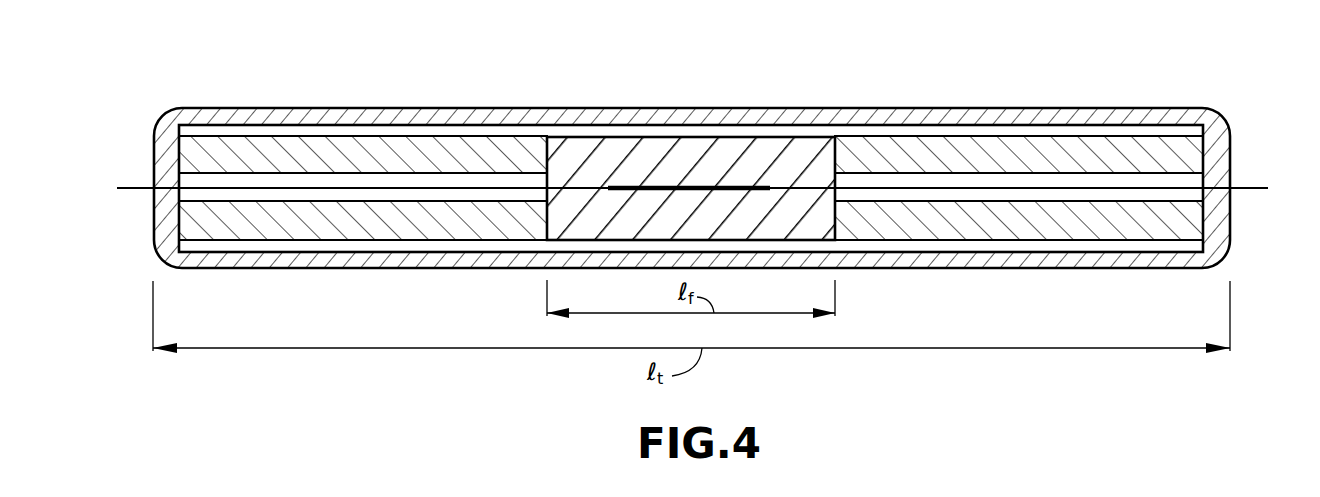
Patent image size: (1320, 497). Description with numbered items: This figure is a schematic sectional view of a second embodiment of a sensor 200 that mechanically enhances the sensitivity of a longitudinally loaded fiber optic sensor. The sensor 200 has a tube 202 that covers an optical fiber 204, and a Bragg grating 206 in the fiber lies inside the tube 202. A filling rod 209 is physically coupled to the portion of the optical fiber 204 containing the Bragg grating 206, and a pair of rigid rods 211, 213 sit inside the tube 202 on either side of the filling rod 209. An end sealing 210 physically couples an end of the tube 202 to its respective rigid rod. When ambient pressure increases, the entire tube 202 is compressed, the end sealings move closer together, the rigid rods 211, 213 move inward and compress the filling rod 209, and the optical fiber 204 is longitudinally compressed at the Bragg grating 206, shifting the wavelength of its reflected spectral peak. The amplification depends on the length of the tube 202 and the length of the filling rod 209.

The sensor 200 is at (667, 262).
The tube 202 is at (412, 113).
The optical fiber 204 is at (132, 187).
The Bragg grating 206 is at (722, 187).
The filling rod 209 is at (608, 142).
The end sealing 210 is at (160, 228).
The rigid rod 211 is at (227, 140).
The rigid rod 213 is at (1037, 143).